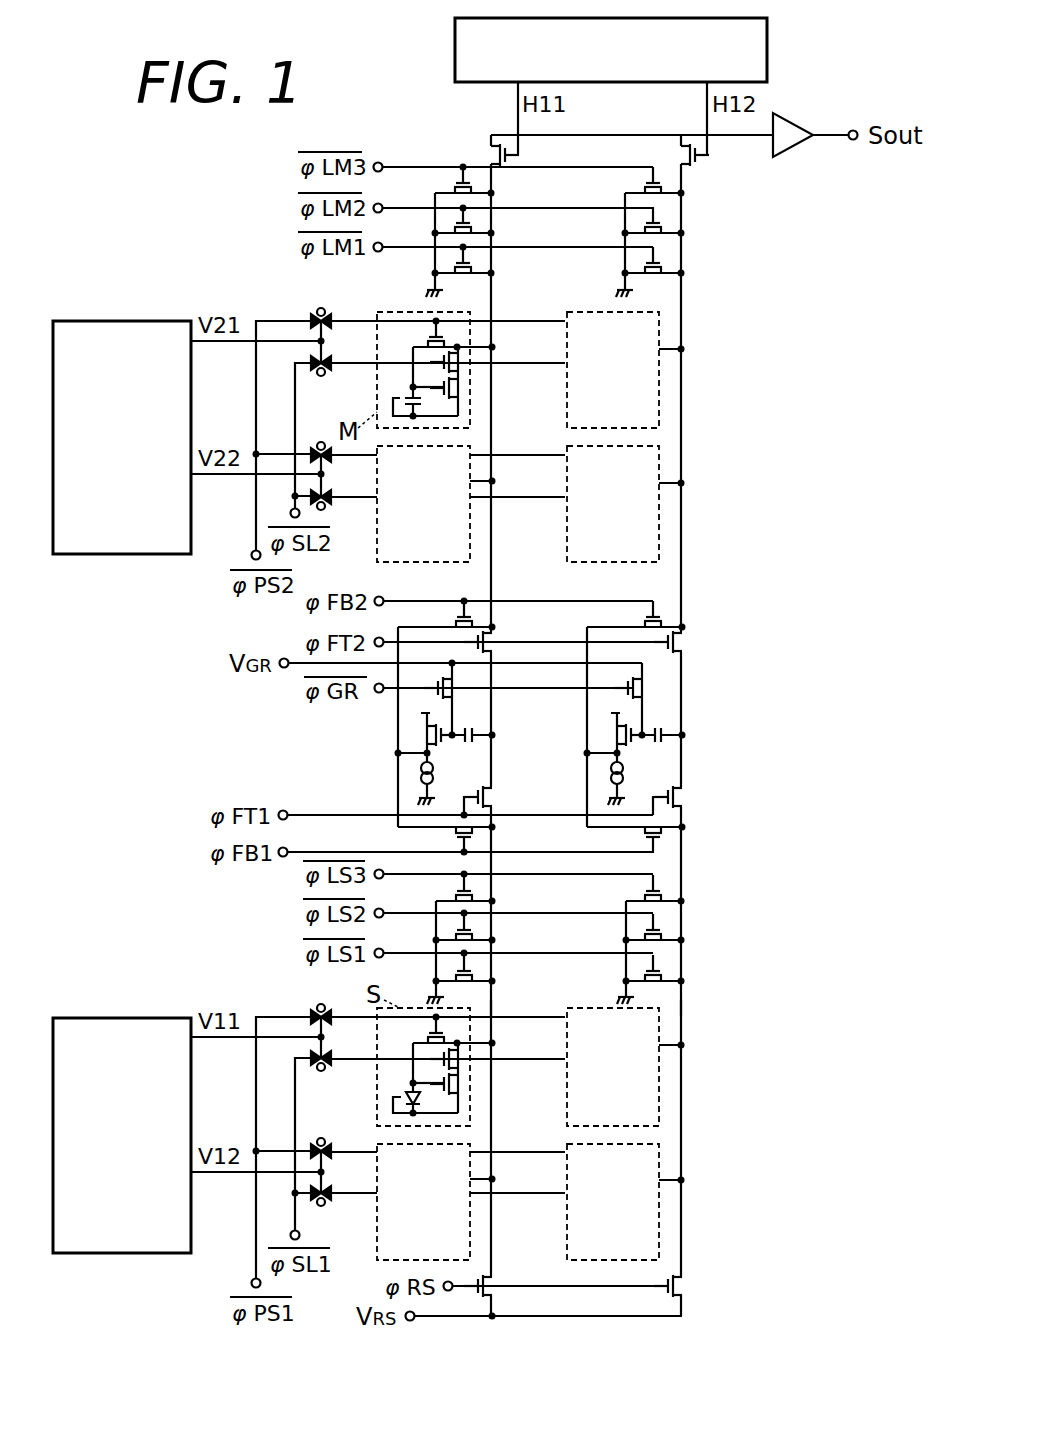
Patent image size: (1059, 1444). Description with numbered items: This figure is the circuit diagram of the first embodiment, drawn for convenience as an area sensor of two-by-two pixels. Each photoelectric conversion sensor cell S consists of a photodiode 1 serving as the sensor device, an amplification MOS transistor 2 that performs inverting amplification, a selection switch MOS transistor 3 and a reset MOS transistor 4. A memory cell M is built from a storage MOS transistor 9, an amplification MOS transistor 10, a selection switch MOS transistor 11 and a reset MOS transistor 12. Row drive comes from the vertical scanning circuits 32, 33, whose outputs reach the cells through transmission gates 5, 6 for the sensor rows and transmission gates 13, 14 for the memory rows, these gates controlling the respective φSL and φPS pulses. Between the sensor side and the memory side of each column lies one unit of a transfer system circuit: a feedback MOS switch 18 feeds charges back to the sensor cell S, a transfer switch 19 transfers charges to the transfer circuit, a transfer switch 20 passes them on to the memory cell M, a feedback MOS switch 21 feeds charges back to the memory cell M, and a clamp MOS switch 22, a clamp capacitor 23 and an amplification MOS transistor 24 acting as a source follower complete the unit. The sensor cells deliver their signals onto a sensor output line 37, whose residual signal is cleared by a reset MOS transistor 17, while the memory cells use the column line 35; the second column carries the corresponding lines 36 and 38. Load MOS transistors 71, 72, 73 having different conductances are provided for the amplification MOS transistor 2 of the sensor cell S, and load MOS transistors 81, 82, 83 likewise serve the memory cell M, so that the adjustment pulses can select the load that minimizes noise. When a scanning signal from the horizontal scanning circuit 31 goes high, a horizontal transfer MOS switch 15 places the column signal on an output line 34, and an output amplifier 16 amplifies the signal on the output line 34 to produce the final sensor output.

The photodiode 1 is at (425, 1098).
The amplification MOS transistor 2 is at (462, 1090).
The selection switch MOS transistor 3 is at (462, 1064).
The reset MOS transistor 4 is at (424, 1035).
The transmission gate 5 is at (321, 1071).
The transmission gate 6 is at (322, 1004).
The storage MOS transistor 9 is at (426, 402).
The amplification MOS transistor 10 is at (462, 393).
The selection switch MOS transistor 11 is at (462, 366).
The reset MOS transistor 12 is at (428, 337).
The transmission gate 13 is at (321, 376).
The transmission gate 14 is at (333, 325).
The horizontal transfer MOS switch 15 is at (512, 162).
The output amplifier 16 is at (793, 120).
The reset MOS transistor 17 is at (497, 1280).
The feedback MOS switch 18 is at (498, 833).
The transfer switch 19 is at (498, 795).
The transfer switch 20 is at (498, 637).
The feedback MOS switch 21 is at (477, 613).
The clamp MOS switch 22 is at (458, 694).
The clamp capacitor 23 is at (476, 730).
The amplification MOS transistor 24 is at (432, 746).
The horizontal scanning circuit 31 is at (767, 42).
The vertical scanning circuit 2 32 is at (150, 321).
The vertical scanning circuit 1 33 is at (150, 1018).
The output line 34 is at (741, 137).
The vertical output line 35 is at (493, 297).
The vertical output line 36 is at (683, 258).
The sensor output line 37 is at (493, 1007).
The vertical output line 38 is at (683, 968).
The load MOS transistor 71 is at (477, 977).
The load MOS transistor 72 is at (477, 937).
The load MOS transistor 73 is at (477, 897).
The load MOS transistor 81 is at (476, 270).
The load MOS transistor 82 is at (476, 230).
The load MOS transistor 83 is at (476, 190).